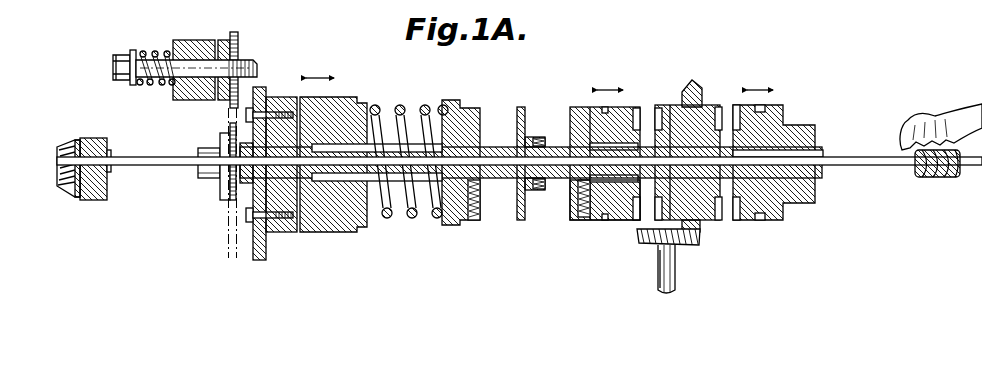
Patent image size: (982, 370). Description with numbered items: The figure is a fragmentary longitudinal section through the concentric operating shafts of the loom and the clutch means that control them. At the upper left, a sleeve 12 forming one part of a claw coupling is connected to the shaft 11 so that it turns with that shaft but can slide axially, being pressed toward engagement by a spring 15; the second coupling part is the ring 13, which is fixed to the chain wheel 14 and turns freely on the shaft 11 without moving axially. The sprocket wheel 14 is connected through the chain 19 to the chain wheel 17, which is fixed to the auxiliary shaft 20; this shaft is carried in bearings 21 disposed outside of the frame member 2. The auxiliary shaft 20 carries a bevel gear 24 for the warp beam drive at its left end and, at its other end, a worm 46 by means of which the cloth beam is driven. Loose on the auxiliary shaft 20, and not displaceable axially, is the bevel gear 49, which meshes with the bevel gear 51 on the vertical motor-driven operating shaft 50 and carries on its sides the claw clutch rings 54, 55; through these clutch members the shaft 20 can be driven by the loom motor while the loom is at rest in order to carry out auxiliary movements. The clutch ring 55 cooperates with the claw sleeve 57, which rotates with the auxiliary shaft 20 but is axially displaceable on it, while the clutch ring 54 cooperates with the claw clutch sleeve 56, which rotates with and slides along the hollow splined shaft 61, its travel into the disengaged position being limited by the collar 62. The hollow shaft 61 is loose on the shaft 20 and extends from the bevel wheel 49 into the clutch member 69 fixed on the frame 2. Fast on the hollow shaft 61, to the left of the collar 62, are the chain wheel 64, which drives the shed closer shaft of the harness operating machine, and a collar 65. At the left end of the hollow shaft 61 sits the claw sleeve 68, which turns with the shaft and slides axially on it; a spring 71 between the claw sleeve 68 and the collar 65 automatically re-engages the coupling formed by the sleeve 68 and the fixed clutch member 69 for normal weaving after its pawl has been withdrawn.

The frame member 2 is at (259, 262).
The shaft 11 is at (256, 62).
The sleeve 12 is at (193, 42).
The ring 13 is at (222, 40).
The chain wheel 14 is at (236, 33).
The spring 15 is at (147, 54).
The chain wheel 17 is at (228, 198).
The chain 19 is at (228, 237).
The auxiliary shaft 20 is at (141, 170).
The bearings 21 is at (95, 138).
The bevel gear 24 is at (63, 141).
The worm 46 is at (946, 178).
The bevel gear 49 is at (700, 240).
The operating shaft 50 is at (665, 264).
The bevel gear 51 is at (682, 250).
The clutch ring 54 is at (665, 105).
The clutch ring 55 is at (705, 105).
The claw clutch sleeve 56 is at (612, 222).
The claw sleeve 57 is at (750, 222).
The hollow splined shaft 61 is at (493, 147).
The collar 62 is at (573, 107).
The chain wheel 64 is at (520, 107).
The collar 65 is at (462, 100).
The claw sleeve 68 is at (340, 232).
The clutch member 69 is at (297, 232).
The spring 71 is at (389, 218).